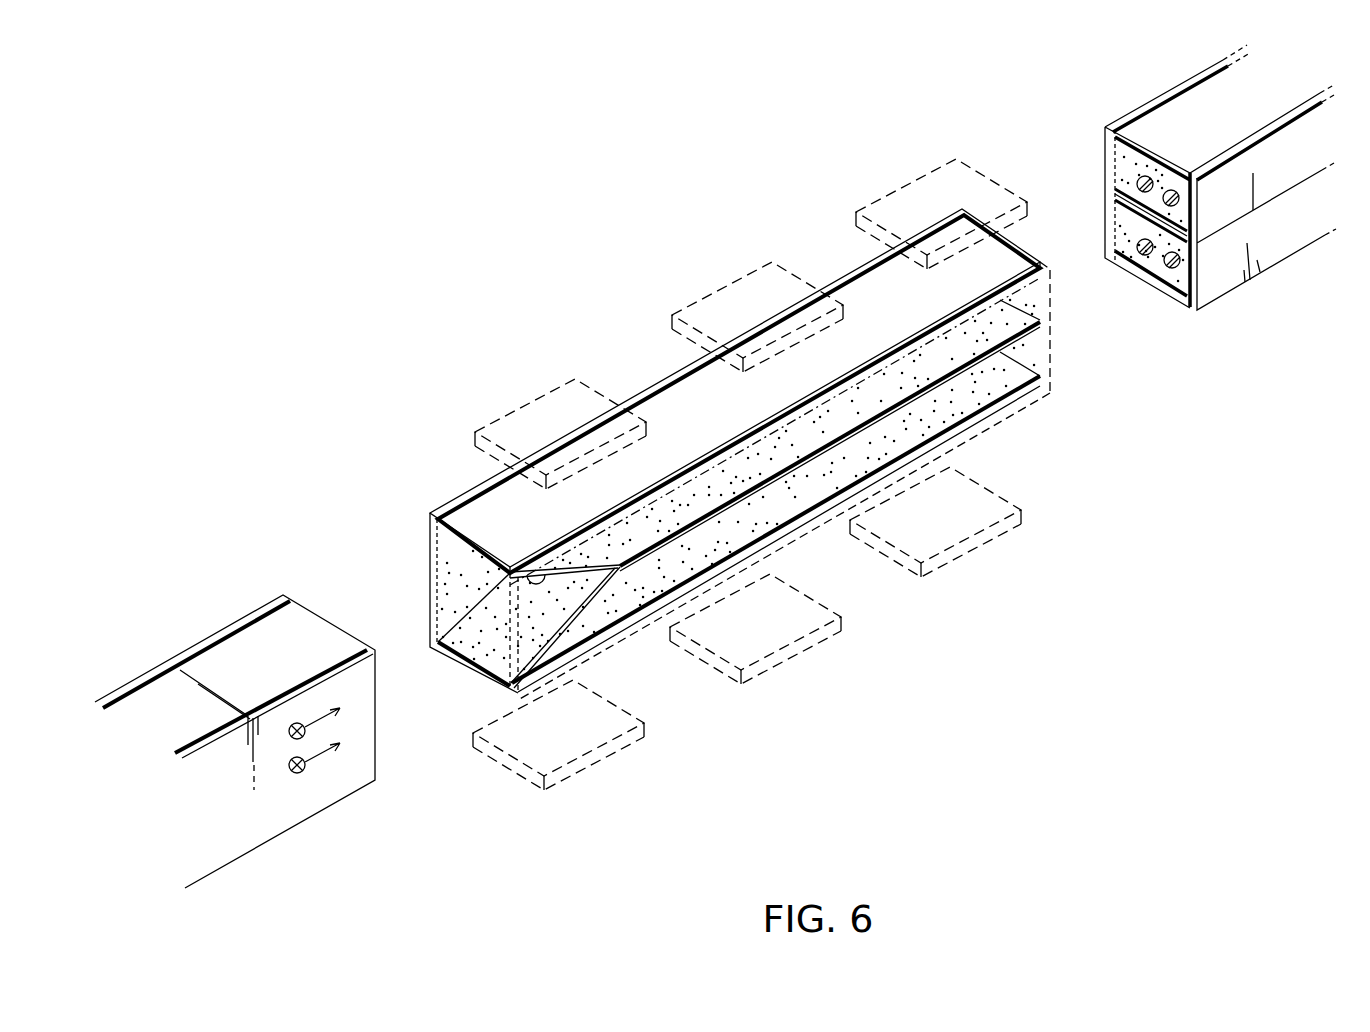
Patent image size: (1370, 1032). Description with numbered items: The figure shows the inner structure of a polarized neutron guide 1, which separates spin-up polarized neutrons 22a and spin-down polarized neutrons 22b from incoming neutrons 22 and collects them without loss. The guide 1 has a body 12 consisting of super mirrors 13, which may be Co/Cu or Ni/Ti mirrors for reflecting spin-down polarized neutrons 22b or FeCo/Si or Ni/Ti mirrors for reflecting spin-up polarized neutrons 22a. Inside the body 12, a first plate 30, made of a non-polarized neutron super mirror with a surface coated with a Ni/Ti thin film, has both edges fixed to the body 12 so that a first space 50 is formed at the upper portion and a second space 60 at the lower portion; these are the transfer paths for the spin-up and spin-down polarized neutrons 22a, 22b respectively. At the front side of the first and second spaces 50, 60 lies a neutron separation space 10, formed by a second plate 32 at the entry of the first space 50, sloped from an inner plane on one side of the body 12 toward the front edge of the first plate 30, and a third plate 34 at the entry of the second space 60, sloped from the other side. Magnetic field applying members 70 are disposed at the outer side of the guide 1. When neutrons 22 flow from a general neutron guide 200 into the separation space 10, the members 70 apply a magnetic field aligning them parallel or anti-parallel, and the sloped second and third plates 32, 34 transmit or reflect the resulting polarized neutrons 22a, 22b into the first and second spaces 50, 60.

The polarized neutron guide 1 is at (753, 168).
The neutron separation space 10 is at (487, 619).
The body 12 is at (834, 258).
The super mirrors 13 is at (432, 570).
The neutrons 22 is at (300, 772).
The spin-up polarized neutrons 22a is at (1143, 183).
The spin-down polarized neutrons 22b is at (1170, 263).
The first plate 30 is at (803, 465).
The second plate 32 is at (510, 566).
The third plate 34 is at (565, 598).
The first space 50 is at (726, 470).
The second space 60 is at (975, 385).
The magnetic field applying member 70 is at (888, 190).
The general neutron guide 200 is at (288, 822).